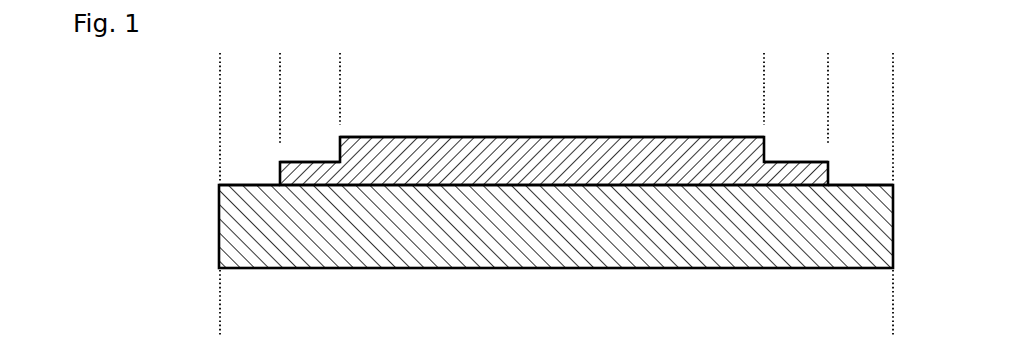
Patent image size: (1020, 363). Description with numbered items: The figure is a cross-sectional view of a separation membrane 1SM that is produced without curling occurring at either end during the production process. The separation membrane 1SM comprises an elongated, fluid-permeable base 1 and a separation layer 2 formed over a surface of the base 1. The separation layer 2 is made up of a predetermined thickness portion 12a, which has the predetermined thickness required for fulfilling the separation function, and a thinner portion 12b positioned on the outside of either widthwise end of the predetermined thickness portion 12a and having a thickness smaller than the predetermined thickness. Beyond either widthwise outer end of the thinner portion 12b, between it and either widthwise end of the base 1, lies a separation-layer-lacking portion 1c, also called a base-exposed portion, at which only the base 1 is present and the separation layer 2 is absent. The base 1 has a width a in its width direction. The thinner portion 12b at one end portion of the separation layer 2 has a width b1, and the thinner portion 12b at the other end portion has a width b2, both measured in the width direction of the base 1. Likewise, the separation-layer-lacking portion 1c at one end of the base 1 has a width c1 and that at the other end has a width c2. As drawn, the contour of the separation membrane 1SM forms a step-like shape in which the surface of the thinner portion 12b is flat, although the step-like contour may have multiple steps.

The base 1 is at (623, 233).
The separation-layer-lacking portion 1c is at (263, 183).
The separation membrane 1SM is at (627, 115).
The separation layer 2 is at (492, 160).
The predetermined thickness portion 12a is at (417, 160).
The thinner portion 12b is at (318, 170).
The width of the base a is at (220, 302).
The width of the thinner portion at one end b1 is at (280, 88).
The width of the thinner portion at the other end b2 is at (764, 88).
The width of the separation-layer-lacking portion at one end c1 is at (220, 88).
The width of the separation-layer-lacking portion at the other end c2 is at (893, 88).